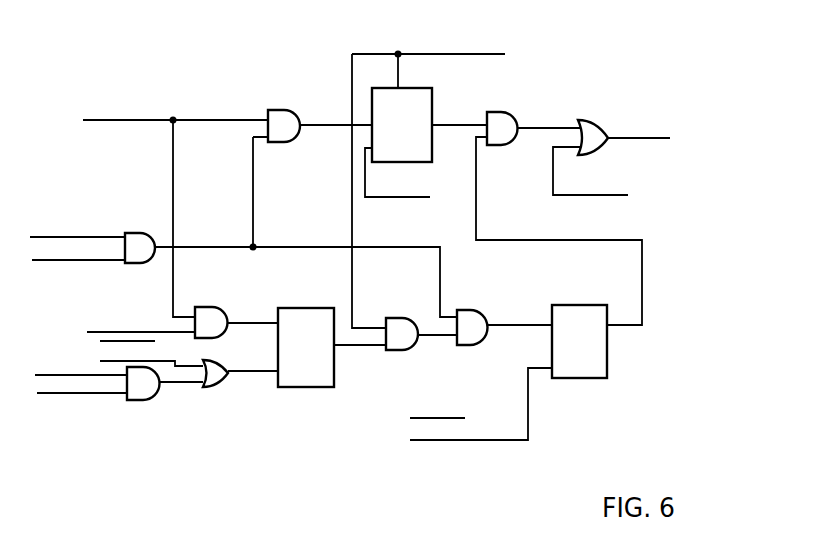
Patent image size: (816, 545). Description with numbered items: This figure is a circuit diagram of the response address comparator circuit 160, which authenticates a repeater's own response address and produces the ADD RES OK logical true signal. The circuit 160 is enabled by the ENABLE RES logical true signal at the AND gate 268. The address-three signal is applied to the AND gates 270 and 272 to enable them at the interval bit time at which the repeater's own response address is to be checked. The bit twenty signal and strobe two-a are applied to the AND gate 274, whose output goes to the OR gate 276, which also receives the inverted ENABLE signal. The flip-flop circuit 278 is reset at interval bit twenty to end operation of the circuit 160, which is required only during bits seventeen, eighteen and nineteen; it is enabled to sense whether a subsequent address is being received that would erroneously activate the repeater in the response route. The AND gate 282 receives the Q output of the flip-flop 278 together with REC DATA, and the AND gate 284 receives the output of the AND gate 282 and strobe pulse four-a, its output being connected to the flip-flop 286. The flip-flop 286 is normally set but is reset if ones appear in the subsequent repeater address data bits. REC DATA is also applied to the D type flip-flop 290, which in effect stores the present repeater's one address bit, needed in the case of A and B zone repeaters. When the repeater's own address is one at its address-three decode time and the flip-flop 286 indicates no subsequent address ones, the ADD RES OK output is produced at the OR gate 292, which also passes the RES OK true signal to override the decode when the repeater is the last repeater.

The response address comparator circuit 160 is at (275, 452).
The AND gate 268 is at (128, 263).
The AND gate 270 is at (298, 111).
The AND gate 272 is at (223, 308).
The AND gate 274 is at (138, 400).
The OR gate 276 is at (212, 387).
The flip-flop circuit 278 is at (310, 387).
The AND gate 282 is at (400, 350).
The AND gate 284 is at (479, 309).
The flip-flop 286 is at (512, 112).
The D type flip-flop 290 is at (418, 88).
The OR gate 292 is at (604, 152).